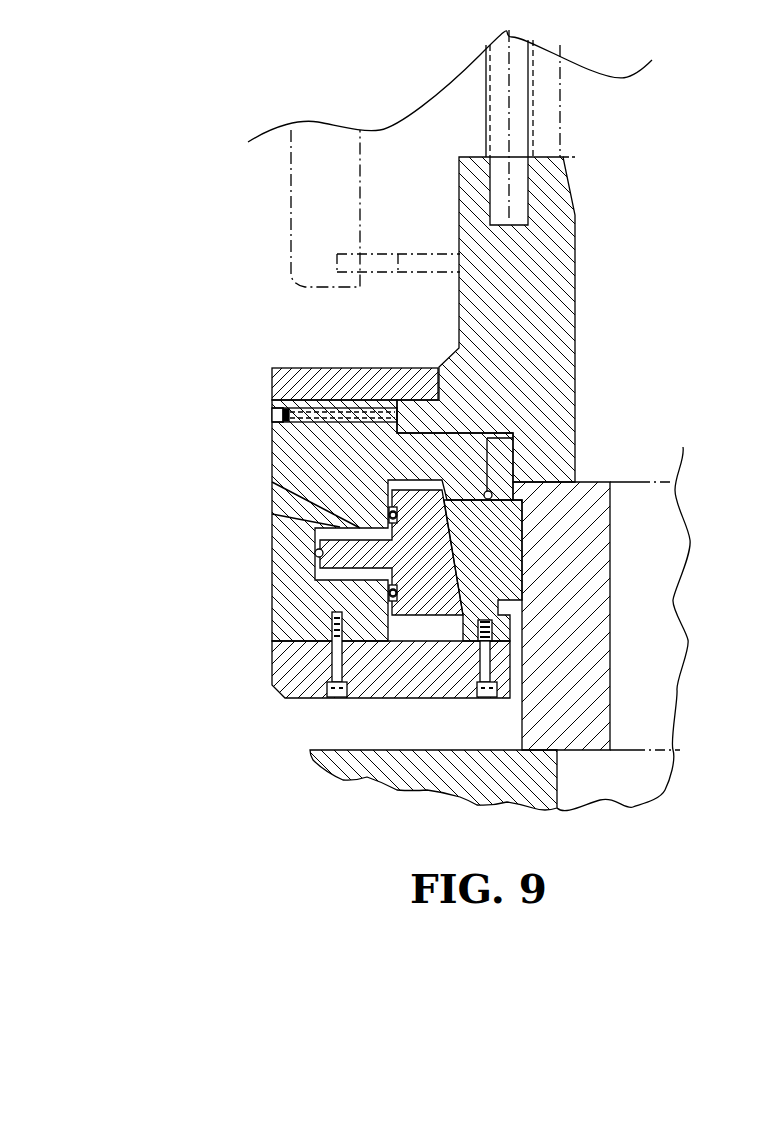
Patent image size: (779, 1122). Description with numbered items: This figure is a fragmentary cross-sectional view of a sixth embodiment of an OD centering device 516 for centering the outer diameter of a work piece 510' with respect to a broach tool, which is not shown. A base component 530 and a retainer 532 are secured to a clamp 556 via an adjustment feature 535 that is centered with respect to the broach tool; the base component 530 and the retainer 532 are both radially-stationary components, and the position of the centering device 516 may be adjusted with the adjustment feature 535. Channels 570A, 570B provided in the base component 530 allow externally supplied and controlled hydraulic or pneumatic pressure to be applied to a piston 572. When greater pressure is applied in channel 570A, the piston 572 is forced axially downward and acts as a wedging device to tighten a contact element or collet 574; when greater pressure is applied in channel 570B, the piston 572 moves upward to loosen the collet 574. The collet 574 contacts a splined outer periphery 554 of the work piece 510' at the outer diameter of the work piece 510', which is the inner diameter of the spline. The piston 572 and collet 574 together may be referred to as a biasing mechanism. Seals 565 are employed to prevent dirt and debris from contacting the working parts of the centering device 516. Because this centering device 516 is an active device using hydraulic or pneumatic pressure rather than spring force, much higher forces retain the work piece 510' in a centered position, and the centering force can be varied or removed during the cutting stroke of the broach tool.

The clamp 556 is at (552, 333).
The adjustment feature 535 is at (327, 405).
The base component 530 is at (293, 440).
The channel 570A is at (272, 512).
The channel 570B is at (353, 577).
The seals 565 is at (315, 551).
The retainer 532 is at (290, 684).
The OD centering device 516 is at (409, 544).
The piston 572 is at (433, 600).
The collet 574 is at (507, 547).
The work piece 510' is at (646, 616).
The splined outer periphery 554 is at (515, 726).